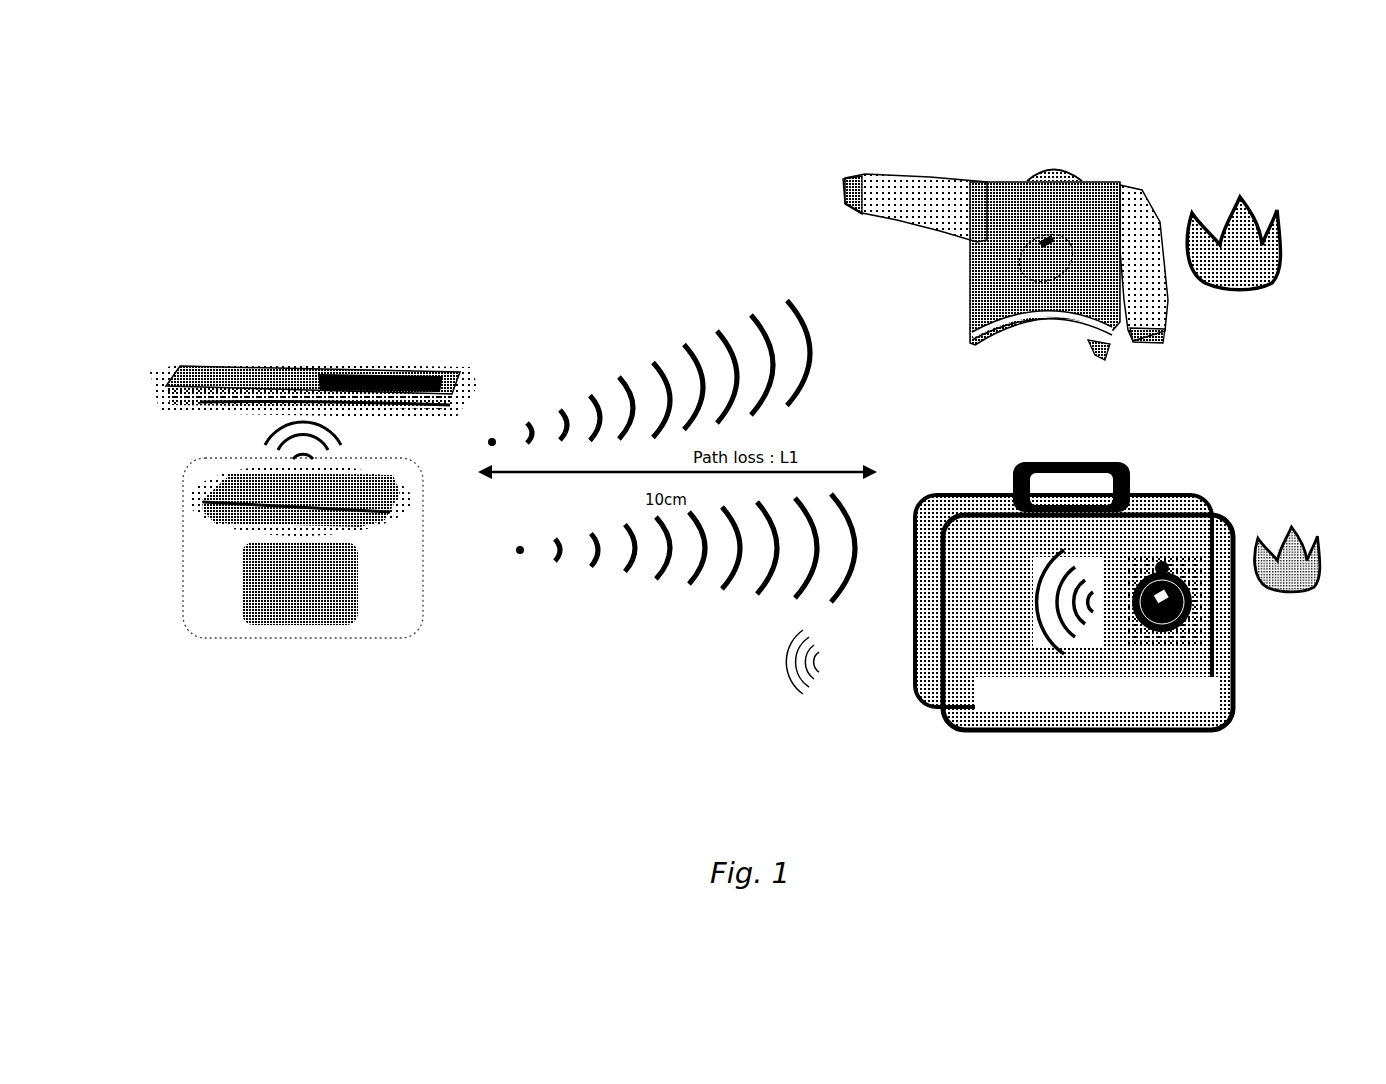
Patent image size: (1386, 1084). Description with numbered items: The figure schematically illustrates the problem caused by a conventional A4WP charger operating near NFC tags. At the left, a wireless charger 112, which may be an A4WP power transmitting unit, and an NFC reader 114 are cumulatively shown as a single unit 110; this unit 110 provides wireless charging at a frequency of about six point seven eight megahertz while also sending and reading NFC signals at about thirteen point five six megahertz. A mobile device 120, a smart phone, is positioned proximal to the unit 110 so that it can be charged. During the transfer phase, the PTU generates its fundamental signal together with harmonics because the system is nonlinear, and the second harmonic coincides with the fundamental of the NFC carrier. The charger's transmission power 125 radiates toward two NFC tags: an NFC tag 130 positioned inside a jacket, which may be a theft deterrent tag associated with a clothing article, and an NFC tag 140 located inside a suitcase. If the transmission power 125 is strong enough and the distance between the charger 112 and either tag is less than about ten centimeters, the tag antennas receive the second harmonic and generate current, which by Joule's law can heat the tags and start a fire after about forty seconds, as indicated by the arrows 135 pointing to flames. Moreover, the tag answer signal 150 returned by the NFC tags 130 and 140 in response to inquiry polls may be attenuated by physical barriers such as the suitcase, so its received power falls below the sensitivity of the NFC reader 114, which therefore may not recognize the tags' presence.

The unit 110 is at (321, 564).
The wireless charger 112 is at (393, 508).
The NFC reader 114 is at (358, 595).
The mobile device 120 is at (257, 367).
The transmission power 125 is at (630, 300).
The NFC tag 130 is at (1113, 182).
The arrows 135 is at (1256, 307).
The NFC tag 140 is at (1232, 722).
The NFC tag answer signal 150 is at (627, 572).